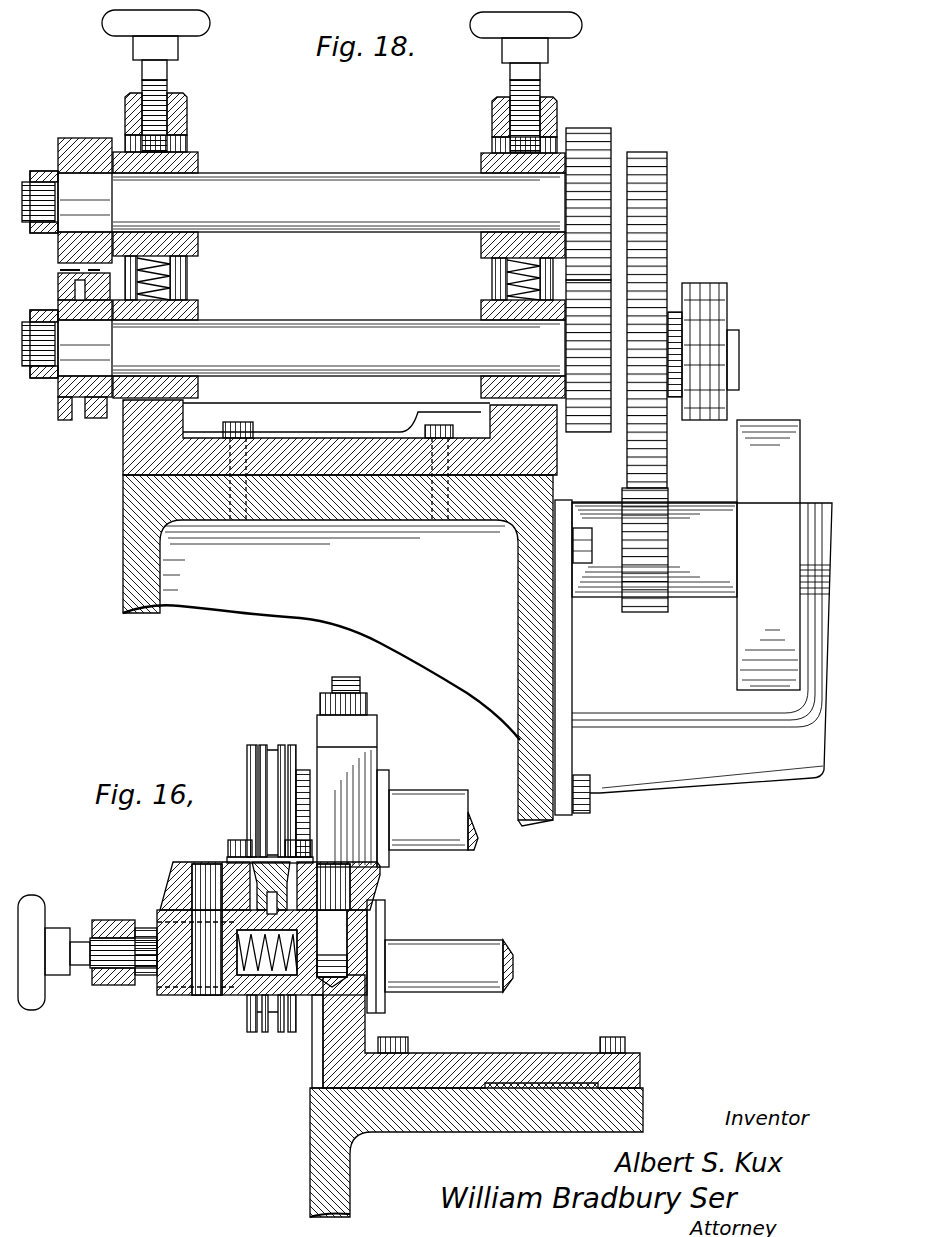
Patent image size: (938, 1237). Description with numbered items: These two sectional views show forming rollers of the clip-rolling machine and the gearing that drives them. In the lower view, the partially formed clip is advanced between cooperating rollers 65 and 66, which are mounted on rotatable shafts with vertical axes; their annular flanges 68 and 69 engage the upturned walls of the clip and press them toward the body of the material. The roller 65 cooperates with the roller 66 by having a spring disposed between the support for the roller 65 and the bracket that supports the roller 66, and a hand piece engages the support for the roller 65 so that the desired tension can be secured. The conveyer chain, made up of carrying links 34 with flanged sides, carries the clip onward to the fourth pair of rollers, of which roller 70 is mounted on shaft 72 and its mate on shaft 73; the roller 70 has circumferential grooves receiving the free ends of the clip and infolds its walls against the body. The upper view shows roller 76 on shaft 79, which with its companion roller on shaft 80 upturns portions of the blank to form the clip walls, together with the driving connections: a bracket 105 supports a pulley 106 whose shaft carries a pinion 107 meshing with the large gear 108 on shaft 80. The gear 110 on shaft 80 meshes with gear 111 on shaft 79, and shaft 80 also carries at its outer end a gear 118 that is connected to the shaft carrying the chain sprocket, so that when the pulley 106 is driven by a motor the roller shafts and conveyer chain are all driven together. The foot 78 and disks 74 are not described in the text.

In FIG. 18, the roller 76 is at (60, 142).
In FIG. 18, the rotatable shaft 79 is at (311, 202).
In FIG. 18, the rotatable shaft 80 is at (311, 348).
In FIG. 18, the carrying link 34 is at (58, 290).
In FIG. 16, the carrying link 34 is at (330, 895).
In FIG. 18, the bracket foot 78 is at (58, 412).
In FIG. 18, the gear 111 is at (611, 136).
In FIG. 18, the large gear 108 is at (668, 188).
In FIG. 18, the gear 118 is at (709, 294).
In FIG. 18, the gear 110 is at (597, 433).
In FIG. 18, the pinion 107 is at (649, 608).
In FIG. 18, the pulley 106 is at (740, 638).
In FIG. 18, the bracket 105 is at (656, 712).
In FIG. 16, the roller 70 is at (250, 762).
In FIG. 16, the roller 65 is at (170, 872).
In FIG. 16, the annular flange 68 is at (163, 876).
In FIG. 16, the annular flange 69 is at (380, 884).
In FIG. 16, the roller 66 is at (377, 900).
In FIG. 16, the rotatable shaft 72 is at (477, 845).
In FIG. 16, the rotatable shaft 73 is at (516, 956).
In FIG. 16, the disks 74 is at (250, 1030).